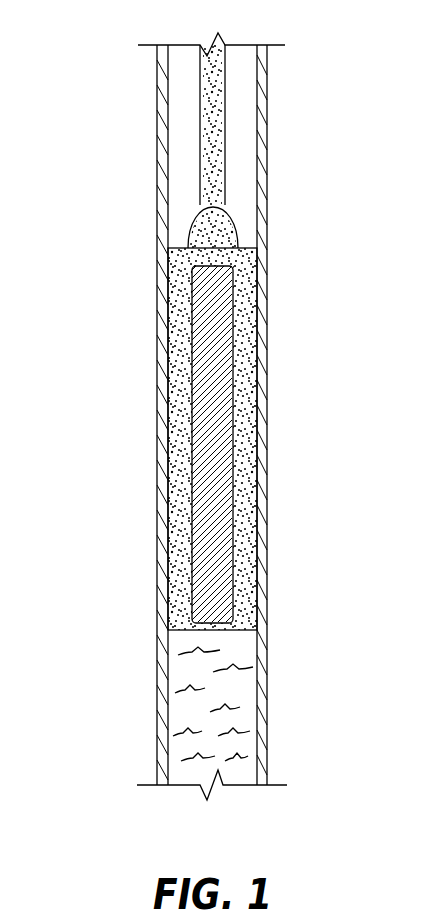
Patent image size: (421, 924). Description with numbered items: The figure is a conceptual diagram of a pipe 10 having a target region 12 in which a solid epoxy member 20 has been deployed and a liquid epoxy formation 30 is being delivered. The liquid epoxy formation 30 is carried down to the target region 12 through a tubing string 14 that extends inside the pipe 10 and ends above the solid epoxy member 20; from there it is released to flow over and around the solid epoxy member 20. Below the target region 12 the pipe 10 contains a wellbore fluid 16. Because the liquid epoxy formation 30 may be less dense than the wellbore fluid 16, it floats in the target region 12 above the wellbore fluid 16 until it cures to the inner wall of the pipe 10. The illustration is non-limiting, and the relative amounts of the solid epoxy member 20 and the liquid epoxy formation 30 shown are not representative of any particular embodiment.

The pipe 10 is at (262, 145).
The target region 12 is at (148, 245).
The tubing string 14 is at (200, 135).
The wellbore fluid 16 is at (243, 682).
The solid epoxy member 20 is at (214, 305).
The liquid epoxy formation 30 is at (258, 358).